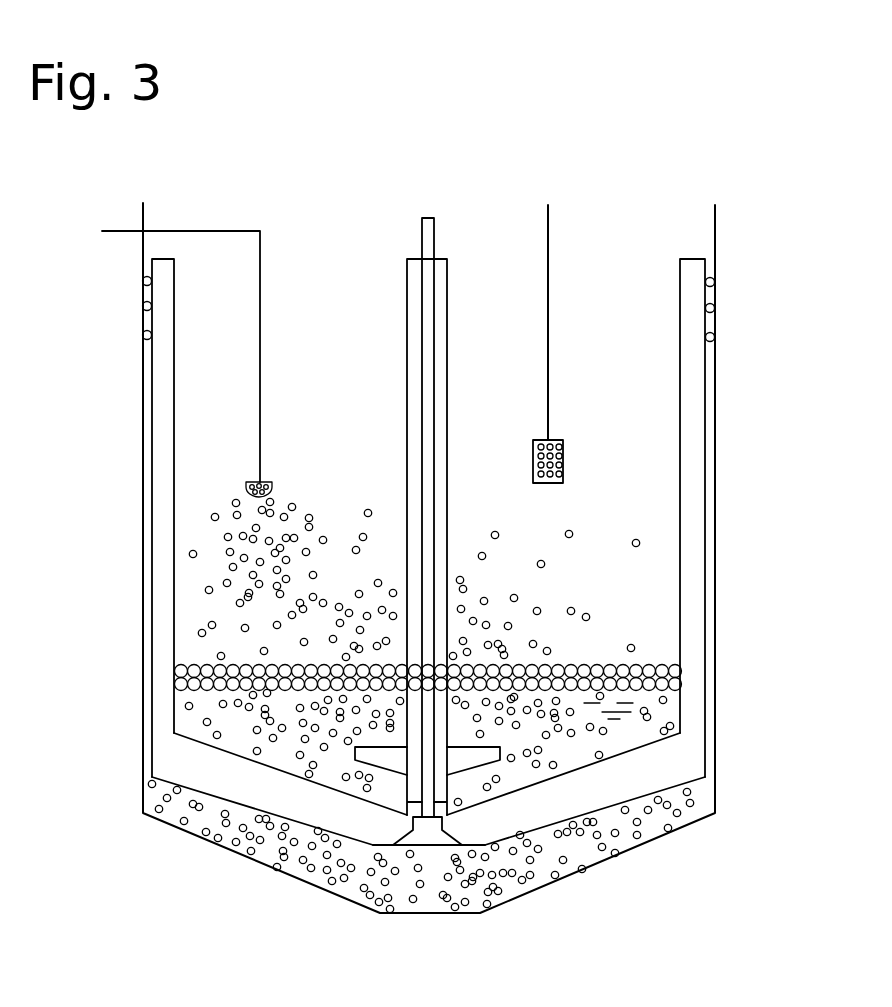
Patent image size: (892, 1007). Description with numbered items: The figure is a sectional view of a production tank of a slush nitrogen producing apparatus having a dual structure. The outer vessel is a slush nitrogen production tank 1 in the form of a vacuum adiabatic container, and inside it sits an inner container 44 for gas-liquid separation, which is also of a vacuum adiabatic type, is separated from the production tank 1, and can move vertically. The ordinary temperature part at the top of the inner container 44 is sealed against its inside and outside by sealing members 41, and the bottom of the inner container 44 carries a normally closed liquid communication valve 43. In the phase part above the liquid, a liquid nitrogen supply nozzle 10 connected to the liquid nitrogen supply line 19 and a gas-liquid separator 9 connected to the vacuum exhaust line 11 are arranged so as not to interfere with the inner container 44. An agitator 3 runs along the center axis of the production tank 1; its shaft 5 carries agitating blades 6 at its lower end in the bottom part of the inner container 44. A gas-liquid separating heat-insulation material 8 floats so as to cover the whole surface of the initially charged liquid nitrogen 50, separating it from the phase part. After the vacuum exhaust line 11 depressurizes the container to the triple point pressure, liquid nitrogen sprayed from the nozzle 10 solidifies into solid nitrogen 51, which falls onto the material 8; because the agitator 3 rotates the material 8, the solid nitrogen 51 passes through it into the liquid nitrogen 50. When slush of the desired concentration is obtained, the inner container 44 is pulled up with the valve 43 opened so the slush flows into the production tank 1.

The slush nitrogen production tank 1 is at (715, 517).
The agitator 3 is at (432, 227).
The shaft 5 is at (421, 237).
The agitating blades 6 is at (385, 772).
The gas-liquid separating heat-insulation material 8 is at (650, 665).
The gas-liquid separator 9 is at (565, 460).
The liquid nitrogen supply nozzle 10 is at (247, 484).
The vacuum exhaust line 11 is at (550, 262).
The liquid nitrogen supply line 19 is at (178, 231).
The sealing members 41 is at (146, 306).
The liquid communication valve 43 is at (432, 847).
The inner container 44 is at (157, 603).
The liquid nitrogen 50 is at (670, 710).
The solid nitrogen 51 is at (211, 517).